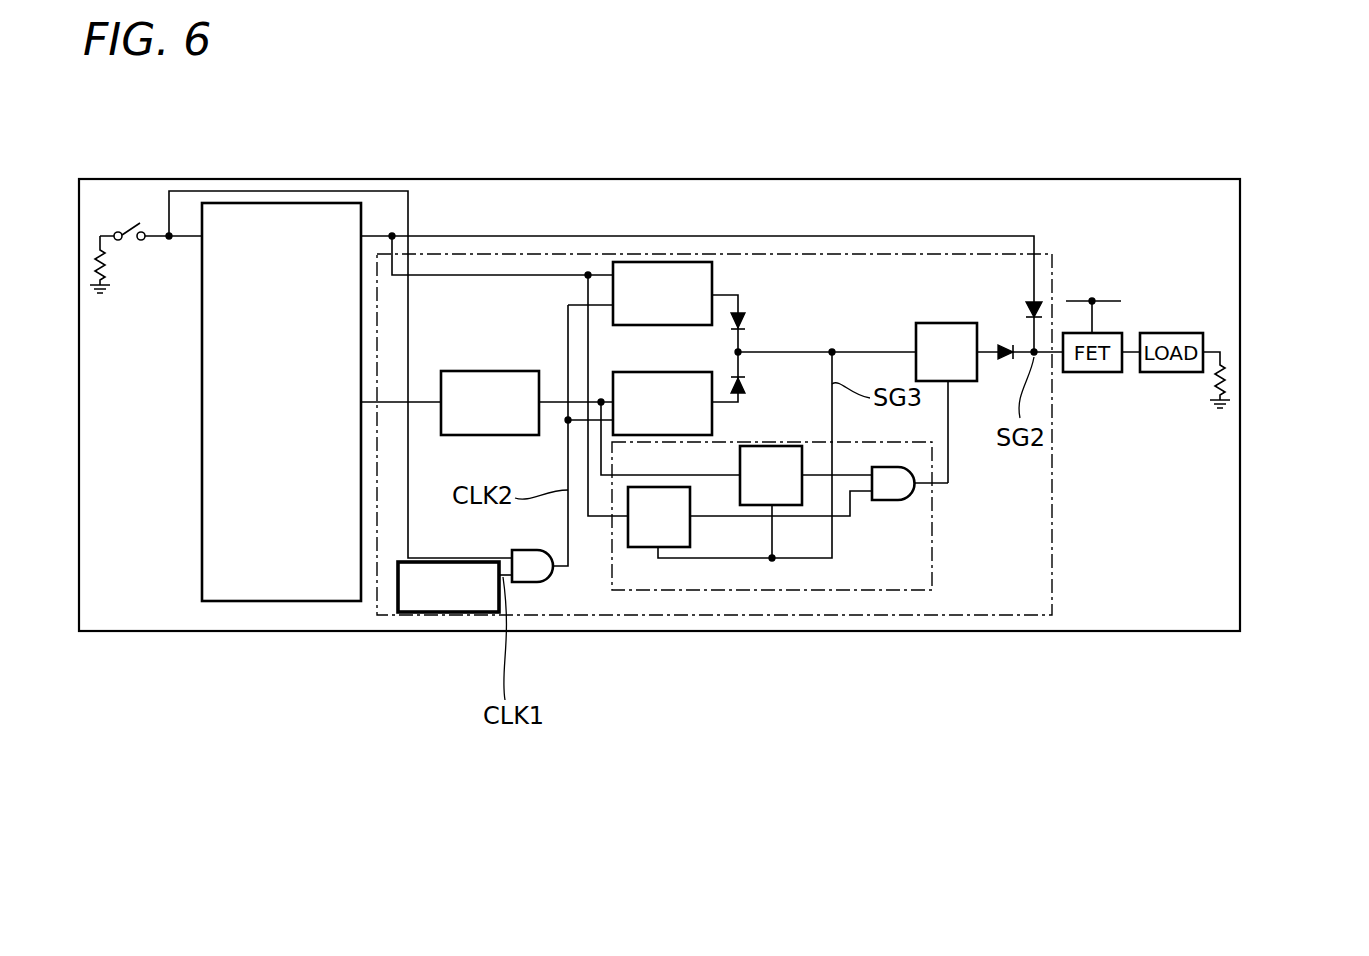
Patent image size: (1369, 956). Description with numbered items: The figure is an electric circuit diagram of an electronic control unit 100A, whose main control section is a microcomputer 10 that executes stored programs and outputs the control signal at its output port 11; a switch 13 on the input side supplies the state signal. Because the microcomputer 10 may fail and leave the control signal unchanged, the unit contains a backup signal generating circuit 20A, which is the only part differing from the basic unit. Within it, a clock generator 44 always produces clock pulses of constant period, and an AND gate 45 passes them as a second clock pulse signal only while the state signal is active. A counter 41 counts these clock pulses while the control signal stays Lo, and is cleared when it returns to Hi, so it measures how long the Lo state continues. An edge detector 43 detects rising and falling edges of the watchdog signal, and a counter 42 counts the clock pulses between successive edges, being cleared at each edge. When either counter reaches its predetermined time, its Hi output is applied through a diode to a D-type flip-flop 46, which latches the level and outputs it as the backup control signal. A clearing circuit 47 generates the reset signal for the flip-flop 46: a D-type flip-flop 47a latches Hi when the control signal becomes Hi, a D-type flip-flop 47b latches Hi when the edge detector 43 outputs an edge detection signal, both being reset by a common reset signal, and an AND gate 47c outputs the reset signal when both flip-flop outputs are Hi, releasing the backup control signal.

The microcomputer 10 is at (202, 478).
The output port 11 is at (367, 235).
The switch 13 is at (197, 237).
The backup signal generating circuit 20A is at (1052, 558).
The counter 41 is at (664, 262).
The counter 42 is at (672, 372).
The edge detector 43 is at (486, 371).
The clock generator 44 is at (445, 612).
The AND gate 45 is at (530, 582).
The D-type flip-flop 46 is at (940, 323).
The clearing circuit 47 is at (932, 562).
The D-type flip-flop 47a is at (640, 547).
The D-type flip-flop 47b is at (757, 505).
The AND gate 47c is at (890, 500).
The electronic control unit 100A is at (1240, 545).